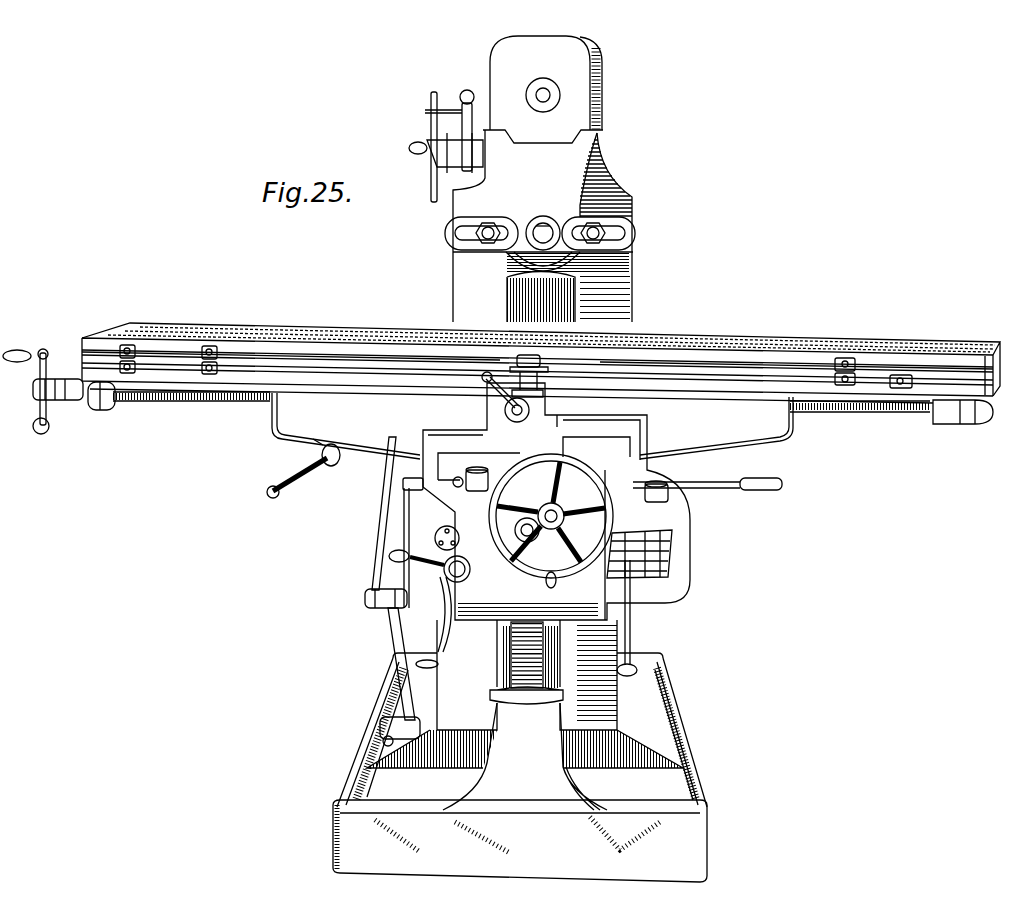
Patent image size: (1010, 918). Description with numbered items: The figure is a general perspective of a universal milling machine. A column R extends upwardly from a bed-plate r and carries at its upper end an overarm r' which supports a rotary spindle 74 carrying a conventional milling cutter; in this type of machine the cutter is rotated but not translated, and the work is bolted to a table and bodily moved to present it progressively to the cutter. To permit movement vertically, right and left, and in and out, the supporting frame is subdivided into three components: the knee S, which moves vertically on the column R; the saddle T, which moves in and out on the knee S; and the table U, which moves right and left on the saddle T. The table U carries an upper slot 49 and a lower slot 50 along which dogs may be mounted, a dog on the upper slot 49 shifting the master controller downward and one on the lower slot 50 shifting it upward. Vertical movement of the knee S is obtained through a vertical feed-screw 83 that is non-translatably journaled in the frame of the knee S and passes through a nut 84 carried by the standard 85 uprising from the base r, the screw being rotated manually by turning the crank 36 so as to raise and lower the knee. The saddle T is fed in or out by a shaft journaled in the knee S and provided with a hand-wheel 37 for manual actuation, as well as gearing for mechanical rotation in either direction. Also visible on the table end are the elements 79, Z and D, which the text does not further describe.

The overarm r' is at (550, 89).
The column R is at (635, 262).
The rotary spindle 74 is at (543, 226).
The table U is at (327, 338).
The upper slot 49 is at (387, 362).
The lower slot 50 is at (737, 378).
The feed rack 79 is at (217, 400).
The saddle T is at (781, 439).
The crank handle Z is at (486, 385).
The feed dial knob D is at (543, 377).
The knee S is at (668, 528).
The hand-wheel 37 is at (551, 521).
The crank 36 is at (420, 663).
The vertical feed-screw 83 is at (510, 653).
The nut 84 is at (548, 693).
The standard 85 is at (525, 715).
The bed-plate r is at (520, 767).